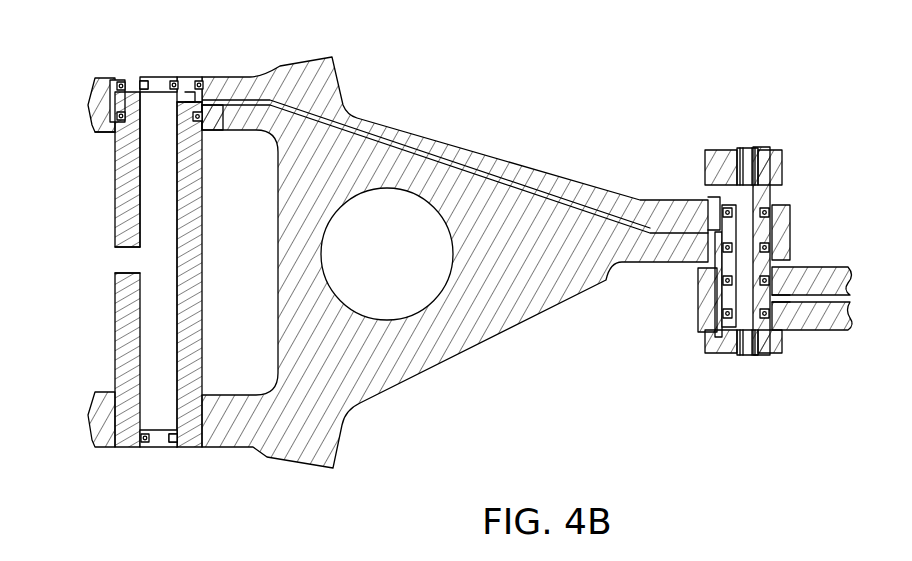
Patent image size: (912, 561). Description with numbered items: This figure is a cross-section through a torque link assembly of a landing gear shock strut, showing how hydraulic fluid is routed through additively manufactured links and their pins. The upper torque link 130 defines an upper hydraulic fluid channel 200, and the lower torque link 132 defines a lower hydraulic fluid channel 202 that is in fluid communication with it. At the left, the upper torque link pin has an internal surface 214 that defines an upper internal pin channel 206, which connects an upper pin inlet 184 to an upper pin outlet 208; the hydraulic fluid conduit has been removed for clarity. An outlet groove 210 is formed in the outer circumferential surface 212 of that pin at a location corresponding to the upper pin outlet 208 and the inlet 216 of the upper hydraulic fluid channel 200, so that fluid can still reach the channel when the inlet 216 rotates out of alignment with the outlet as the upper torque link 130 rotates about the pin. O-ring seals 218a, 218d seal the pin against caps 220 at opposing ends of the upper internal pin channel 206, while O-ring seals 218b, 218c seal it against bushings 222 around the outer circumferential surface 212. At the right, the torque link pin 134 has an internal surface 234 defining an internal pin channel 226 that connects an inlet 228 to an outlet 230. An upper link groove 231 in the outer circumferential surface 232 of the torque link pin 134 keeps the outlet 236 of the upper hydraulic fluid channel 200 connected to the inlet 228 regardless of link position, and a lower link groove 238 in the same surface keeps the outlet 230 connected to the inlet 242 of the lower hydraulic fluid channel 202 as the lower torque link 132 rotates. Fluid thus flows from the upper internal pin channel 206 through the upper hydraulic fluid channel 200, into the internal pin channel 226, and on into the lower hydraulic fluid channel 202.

The upper torque link 130 is at (328, 92).
The upper hydraulic fluid channel 200 is at (578, 190).
The outlet groove 210 is at (110, 93).
The bushing 222 is at (93, 126).
The torque link pin 134 is at (124, 152).
The outer circumferential surface 212 is at (117, 200).
The upper pin inlet 184 is at (126, 261).
The upper internal pin channel 206 is at (160, 228).
The internal surface 214 is at (142, 198).
The inlet 216 is at (214, 110).
The upper pin outlet 208 is at (189, 92).
The cap 220 is at (156, 78).
The O-ring seal 218a is at (142, 80).
The O-ring seal 218b is at (117, 85).
The O-ring seal 218c is at (122, 118).
The O-ring seal 218d is at (175, 446).
The outlet 236 is at (706, 222).
The inlet 228 is at (735, 217).
The lower link groove 238 is at (713, 301).
The internal pin channel 226 is at (735, 263).
The upper link groove 231 is at (769, 227).
The outer circumferential surface 232 is at (776, 205).
The internal surface 234 is at (752, 184).
The outlet 230 is at (750, 300).
The lower hydraulic fluid channel 202 is at (822, 268).
The lower torque link 132 is at (835, 322).
The inlet 242 is at (778, 300).